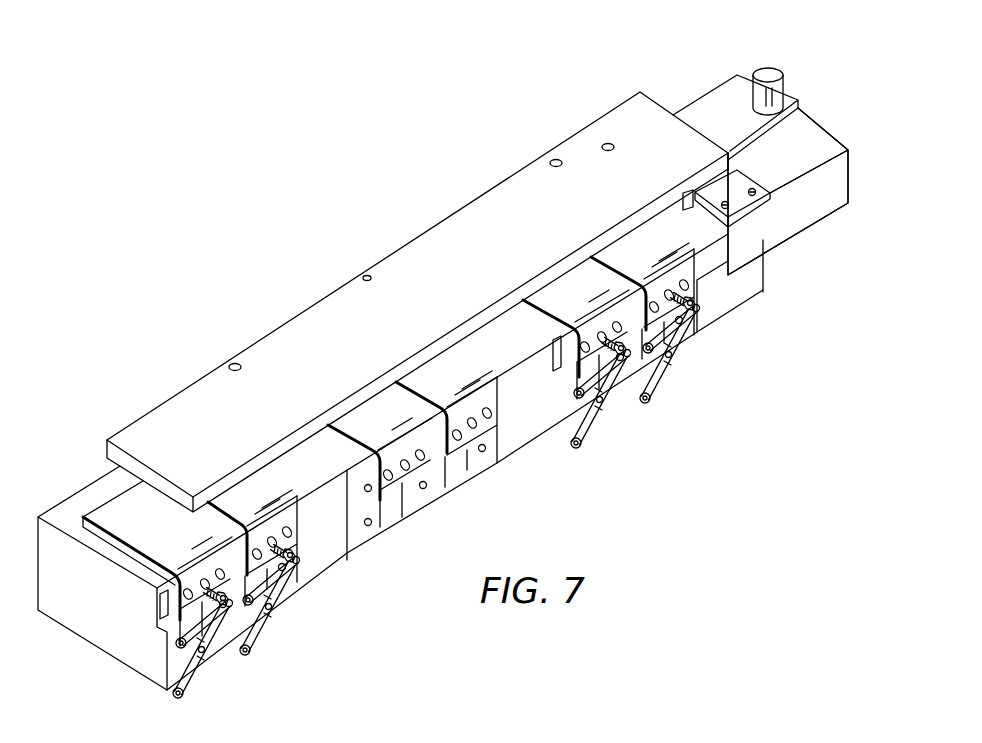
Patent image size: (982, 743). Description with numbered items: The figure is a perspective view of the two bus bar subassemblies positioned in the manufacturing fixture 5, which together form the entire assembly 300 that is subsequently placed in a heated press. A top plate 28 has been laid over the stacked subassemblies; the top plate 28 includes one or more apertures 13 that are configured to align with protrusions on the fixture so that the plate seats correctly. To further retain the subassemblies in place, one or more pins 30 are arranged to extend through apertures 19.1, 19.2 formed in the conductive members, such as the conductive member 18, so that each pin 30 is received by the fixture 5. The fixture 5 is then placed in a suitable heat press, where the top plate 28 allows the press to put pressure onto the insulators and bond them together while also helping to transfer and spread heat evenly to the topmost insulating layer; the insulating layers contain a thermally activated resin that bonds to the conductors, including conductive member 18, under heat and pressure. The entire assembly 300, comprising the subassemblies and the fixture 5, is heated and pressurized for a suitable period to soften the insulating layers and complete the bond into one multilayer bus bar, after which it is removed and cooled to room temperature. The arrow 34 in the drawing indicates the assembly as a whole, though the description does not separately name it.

The fixture 5 is at (97, 624).
The apertures 13 is at (280, 335).
The conductive member 18 is at (718, 127).
The aperture 19.1 is at (808, 137).
The aperture 19.2 is at (808, 137).
The top plate 28 is at (447, 262).
The pin 30 is at (765, 70).
The holding device 34 is at (148, 314).
The entire assembly 300 is at (562, 506).